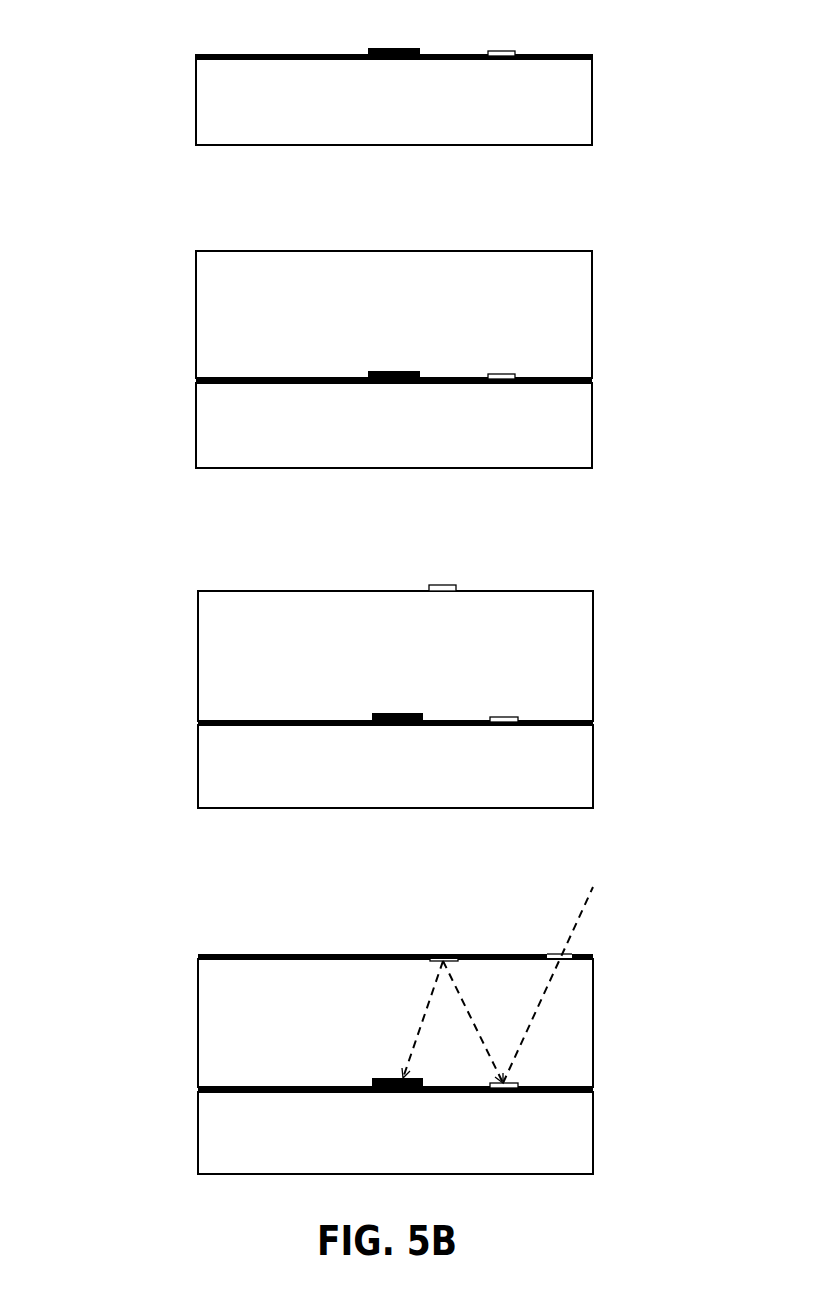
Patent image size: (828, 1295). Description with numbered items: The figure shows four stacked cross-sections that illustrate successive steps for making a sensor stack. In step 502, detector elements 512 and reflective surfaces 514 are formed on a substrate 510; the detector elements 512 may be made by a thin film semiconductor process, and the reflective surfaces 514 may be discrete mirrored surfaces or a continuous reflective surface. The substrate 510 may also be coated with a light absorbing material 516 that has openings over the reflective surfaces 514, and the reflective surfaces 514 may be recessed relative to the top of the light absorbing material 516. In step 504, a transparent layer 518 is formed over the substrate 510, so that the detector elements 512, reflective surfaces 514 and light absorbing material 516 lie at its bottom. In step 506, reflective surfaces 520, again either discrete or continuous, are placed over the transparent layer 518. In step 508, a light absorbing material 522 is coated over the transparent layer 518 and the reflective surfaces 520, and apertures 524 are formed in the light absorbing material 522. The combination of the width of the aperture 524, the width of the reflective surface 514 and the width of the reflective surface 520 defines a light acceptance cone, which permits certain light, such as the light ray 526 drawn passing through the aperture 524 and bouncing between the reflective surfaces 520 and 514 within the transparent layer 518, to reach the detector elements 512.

The step 502 is at (129, 108).
The step 504 is at (129, 352).
The step 506 is at (129, 694).
The step 508 is at (129, 1060).
The substrate 510 is at (592, 108).
The detector element 512 is at (392, 48).
The reflective surface 514 is at (504, 50).
The light absorbing material 516 is at (288, 54).
The transparent layer 518 is at (592, 330).
The reflective surface 520 is at (444, 585).
The light absorbing material 522 is at (312, 954).
The aperture 524 is at (569, 963).
The light ray 526 is at (577, 924).